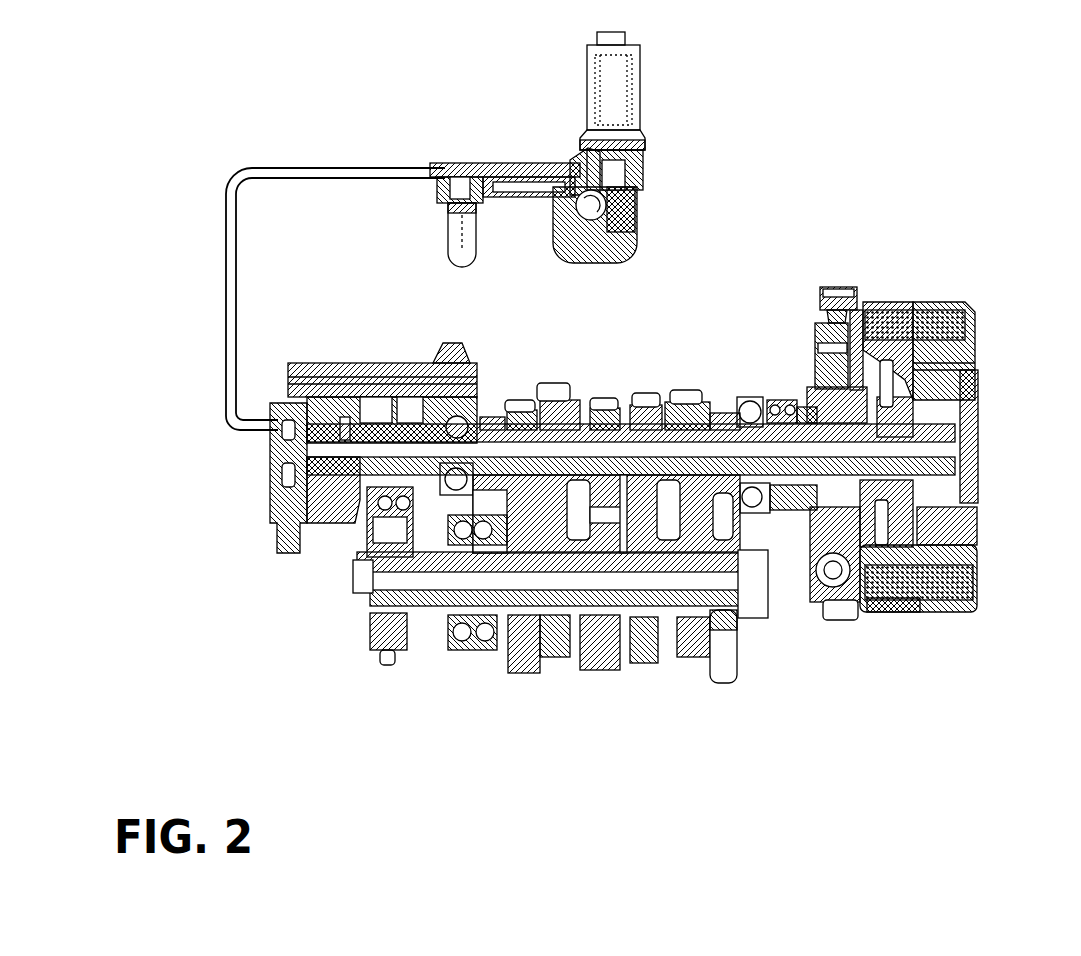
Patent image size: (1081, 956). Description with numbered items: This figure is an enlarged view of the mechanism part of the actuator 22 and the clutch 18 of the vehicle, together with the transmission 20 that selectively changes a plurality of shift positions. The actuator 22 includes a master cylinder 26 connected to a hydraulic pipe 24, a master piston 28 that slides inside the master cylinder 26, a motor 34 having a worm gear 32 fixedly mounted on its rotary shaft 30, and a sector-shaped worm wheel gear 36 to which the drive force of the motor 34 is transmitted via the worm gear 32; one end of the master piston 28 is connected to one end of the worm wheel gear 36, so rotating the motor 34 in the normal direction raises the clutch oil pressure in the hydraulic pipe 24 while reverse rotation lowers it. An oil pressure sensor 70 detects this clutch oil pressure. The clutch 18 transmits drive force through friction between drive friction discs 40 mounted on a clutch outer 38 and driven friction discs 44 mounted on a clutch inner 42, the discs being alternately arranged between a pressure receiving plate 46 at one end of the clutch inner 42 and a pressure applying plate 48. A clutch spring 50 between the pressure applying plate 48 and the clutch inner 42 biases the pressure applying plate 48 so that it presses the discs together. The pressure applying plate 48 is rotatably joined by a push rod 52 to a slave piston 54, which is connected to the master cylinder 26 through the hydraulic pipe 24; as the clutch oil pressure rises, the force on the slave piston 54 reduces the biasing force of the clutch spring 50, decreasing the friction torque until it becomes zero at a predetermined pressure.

The clutch 18 is at (1000, 377).
The transmission 20 is at (566, 712).
The actuator 22 is at (657, 78).
The hydraulic pipe 24 is at (332, 168).
The master cylinder 26 is at (436, 163).
The master piston 28 is at (517, 163).
The rotary shaft 30 is at (627, 183).
The worm gear 32 is at (630, 210).
The motor 34 is at (586, 75).
The worm wheel gear 36 is at (572, 263).
The clutch outer 38 is at (882, 302).
The drive friction discs 40 is at (925, 302).
The clutch inner 42 is at (905, 612).
The driven friction discs 44 is at (968, 325).
The pressure receiving plate 46 is at (838, 620).
The pressure applying plate 48 is at (983, 562).
The clutch spring 50 is at (985, 517).
The push rod 52 is at (577, 398).
The slave piston 54 is at (272, 492).
The oil pressure sensor 70 is at (447, 235).